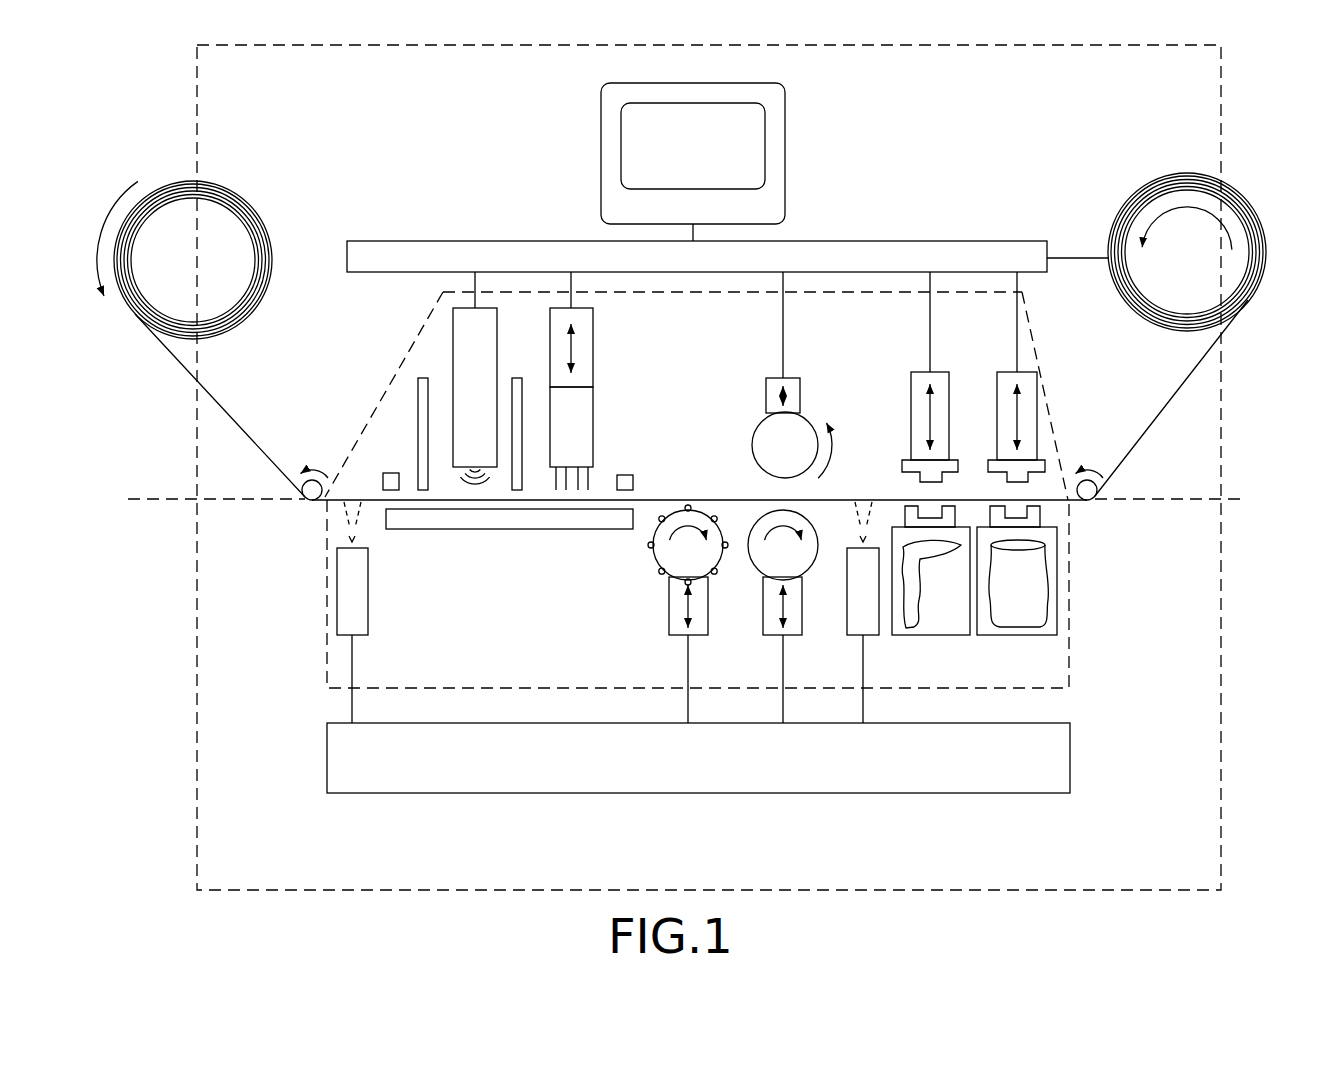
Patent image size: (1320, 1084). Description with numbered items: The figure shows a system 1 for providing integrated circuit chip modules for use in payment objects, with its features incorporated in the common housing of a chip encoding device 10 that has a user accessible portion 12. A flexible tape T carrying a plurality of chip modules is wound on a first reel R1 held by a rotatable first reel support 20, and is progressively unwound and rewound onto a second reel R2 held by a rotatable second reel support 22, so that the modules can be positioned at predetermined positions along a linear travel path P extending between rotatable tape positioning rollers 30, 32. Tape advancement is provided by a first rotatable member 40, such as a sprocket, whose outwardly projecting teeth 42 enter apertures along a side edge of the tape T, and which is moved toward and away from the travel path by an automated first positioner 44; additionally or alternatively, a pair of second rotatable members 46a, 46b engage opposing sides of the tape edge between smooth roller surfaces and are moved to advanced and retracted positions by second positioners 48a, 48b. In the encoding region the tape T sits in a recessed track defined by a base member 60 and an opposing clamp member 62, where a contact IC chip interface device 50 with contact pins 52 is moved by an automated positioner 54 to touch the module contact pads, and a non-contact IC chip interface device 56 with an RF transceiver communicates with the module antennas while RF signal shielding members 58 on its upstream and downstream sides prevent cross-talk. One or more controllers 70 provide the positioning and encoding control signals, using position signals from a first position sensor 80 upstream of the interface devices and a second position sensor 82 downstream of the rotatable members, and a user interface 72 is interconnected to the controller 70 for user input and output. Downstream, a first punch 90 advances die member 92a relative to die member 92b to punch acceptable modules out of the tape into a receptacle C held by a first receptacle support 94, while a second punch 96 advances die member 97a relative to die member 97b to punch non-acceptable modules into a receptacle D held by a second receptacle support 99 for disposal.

The system 1 is at (168, 684).
The chip encoding device 10 is at (197, 798).
The user accessible portion 12 is at (327, 592).
The first reel support 20 is at (184, 198).
The second reel support 22 is at (1255, 257).
The tape positioning roller 30 is at (308, 500).
The tape positioning roller 32 is at (1098, 488).
The first rotatable member 40 is at (655, 560).
The teeth 42 is at (652, 538).
The first positioner 44 is at (669, 605).
The second rotatable member 46a is at (750, 565).
The second rotatable member 46b is at (753, 440).
The second positioner 48a is at (763, 625).
The second positioner 48b is at (766, 393).
The contact IC chip interface device 50 is at (593, 390).
The contact pins 52 is at (588, 477).
The automated positioner 54 is at (593, 312).
The non-contact IC chip interface device 56 is at (453, 312).
The RF signal shielding members 58 is at (418, 385).
The base member 60 is at (452, 529).
The clamp member 62 is at (390, 473).
The controller 70 is at (918, 241).
The user interface 72 is at (783, 88).
The first position sensor 80 is at (368, 625).
The second position sensor 82 is at (847, 630).
The first punch 90 is at (911, 395).
The first die member 92a is at (902, 463).
The second die member 92b is at (948, 510).
The first receptacle support 94 is at (892, 622).
The second punch 96 is at (1037, 395).
The first die member 97a is at (1045, 466).
The second die member 97b is at (1045, 513).
The second receptacle support 99 is at (992, 635).
The first reel R1 is at (172, 185).
The second reel R2 is at (1255, 195).
The flexible tape T is at (195, 380).
The travel path P is at (685, 498).
The receptacle C is at (925, 635).
The receptacle D is at (1030, 635).